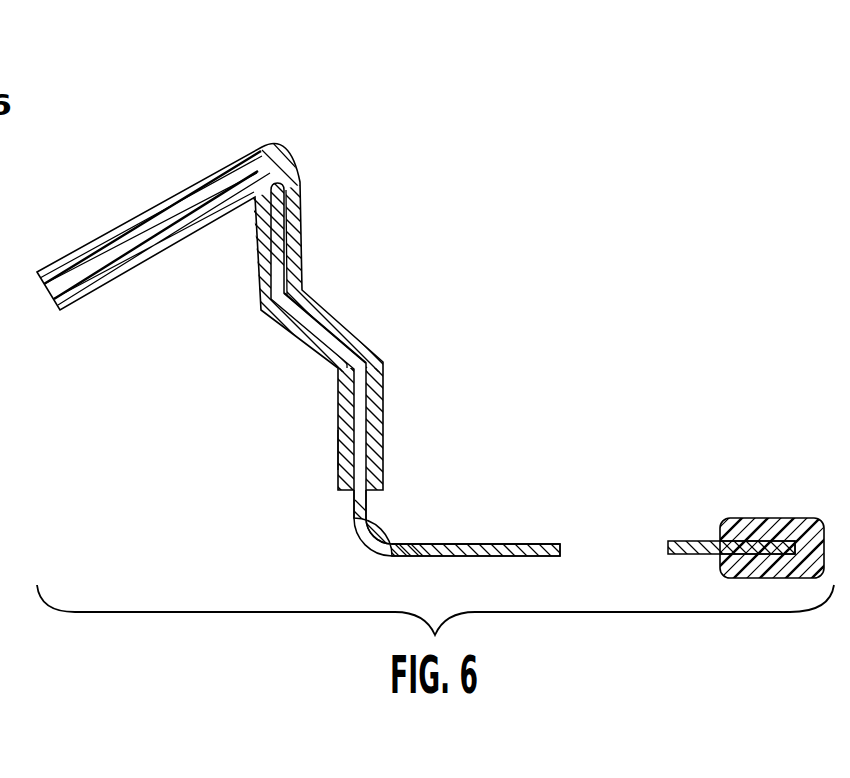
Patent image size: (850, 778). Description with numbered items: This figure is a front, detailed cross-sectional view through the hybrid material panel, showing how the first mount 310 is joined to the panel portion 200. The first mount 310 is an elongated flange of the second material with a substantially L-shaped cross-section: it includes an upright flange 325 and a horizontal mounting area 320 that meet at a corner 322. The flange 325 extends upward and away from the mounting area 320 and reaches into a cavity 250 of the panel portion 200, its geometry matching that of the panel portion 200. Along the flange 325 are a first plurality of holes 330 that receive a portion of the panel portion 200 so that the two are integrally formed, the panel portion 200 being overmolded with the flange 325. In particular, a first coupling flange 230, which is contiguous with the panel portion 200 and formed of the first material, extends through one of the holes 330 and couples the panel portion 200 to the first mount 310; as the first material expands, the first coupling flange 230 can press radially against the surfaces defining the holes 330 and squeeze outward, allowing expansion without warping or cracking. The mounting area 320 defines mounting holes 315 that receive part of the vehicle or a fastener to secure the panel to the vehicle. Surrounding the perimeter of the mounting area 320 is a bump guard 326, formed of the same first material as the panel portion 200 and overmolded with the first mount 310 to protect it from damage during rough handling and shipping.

The panel portion 200 is at (210, 263).
The cavity 250 is at (283, 234).
The flange 325 is at (332, 318).
The first coupling flange 230 is at (365, 436).
The first plurality of holes 330 is at (294, 468).
The corner 322 is at (357, 533).
The mounting area 320 is at (437, 543).
The first mount 310 is at (476, 483).
The mounting holes 315 is at (718, 488).
The bump guard 326 is at (757, 518).